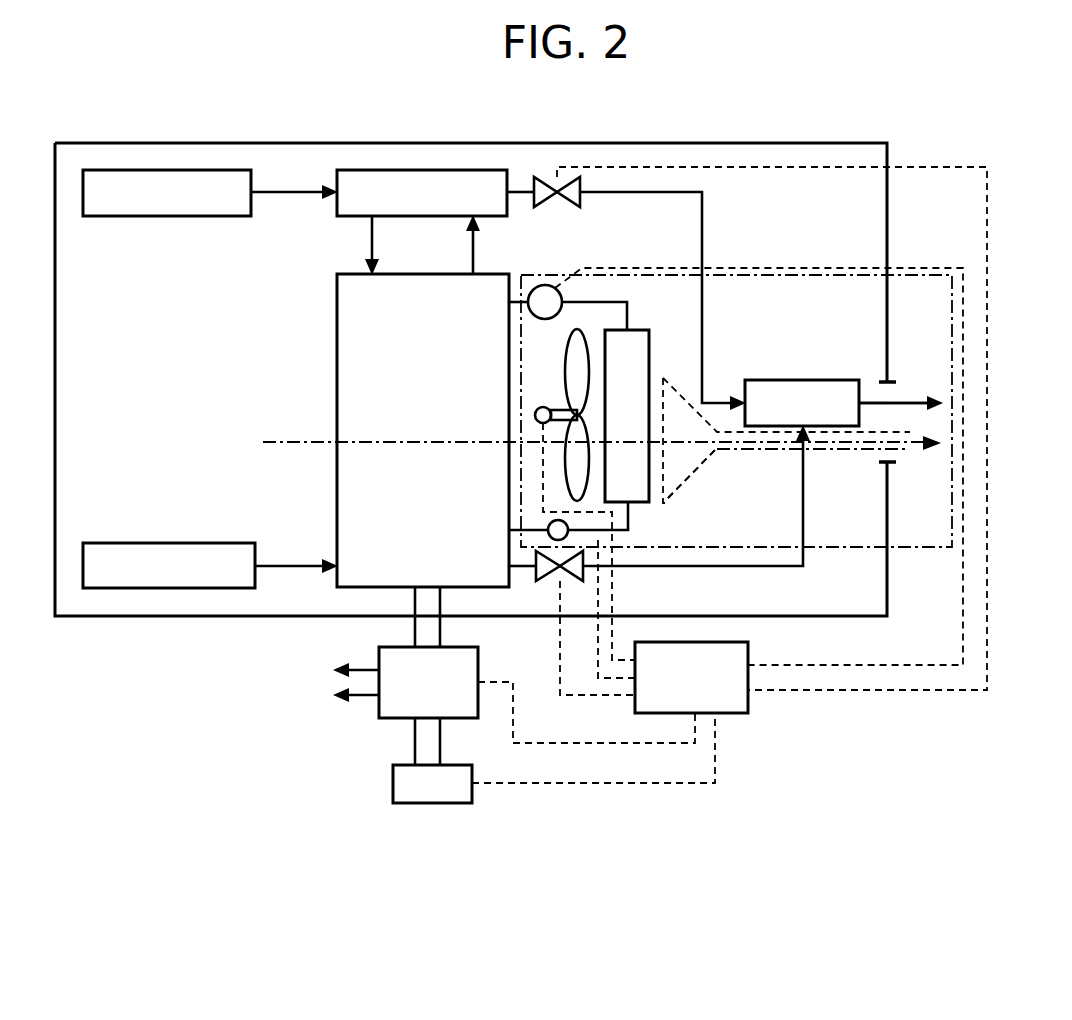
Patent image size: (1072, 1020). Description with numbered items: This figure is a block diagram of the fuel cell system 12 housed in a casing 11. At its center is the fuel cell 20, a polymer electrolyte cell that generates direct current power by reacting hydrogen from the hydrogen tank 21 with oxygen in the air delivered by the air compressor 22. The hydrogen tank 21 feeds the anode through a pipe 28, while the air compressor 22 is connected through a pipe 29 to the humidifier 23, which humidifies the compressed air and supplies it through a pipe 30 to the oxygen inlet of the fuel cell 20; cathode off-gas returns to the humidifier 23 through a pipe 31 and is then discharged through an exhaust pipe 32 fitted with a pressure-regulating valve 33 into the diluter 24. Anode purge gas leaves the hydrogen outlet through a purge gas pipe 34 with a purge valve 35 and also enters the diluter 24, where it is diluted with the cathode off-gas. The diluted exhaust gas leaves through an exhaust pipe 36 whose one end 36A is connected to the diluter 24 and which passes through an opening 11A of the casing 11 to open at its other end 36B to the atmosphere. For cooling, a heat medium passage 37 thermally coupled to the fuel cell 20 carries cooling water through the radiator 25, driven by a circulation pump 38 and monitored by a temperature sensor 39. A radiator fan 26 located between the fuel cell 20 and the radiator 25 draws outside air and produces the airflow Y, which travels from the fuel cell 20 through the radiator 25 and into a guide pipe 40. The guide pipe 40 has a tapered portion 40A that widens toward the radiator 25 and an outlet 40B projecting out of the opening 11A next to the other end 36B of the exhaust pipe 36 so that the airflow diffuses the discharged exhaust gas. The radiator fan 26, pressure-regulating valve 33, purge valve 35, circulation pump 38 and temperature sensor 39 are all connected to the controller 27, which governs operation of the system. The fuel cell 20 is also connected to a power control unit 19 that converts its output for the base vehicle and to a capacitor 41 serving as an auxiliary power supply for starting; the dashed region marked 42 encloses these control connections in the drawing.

The casing 11 is at (888, 197).
The opening 11A is at (896, 384).
The fuel cell system 12 is at (940, 131).
The power control unit 19 is at (395, 708).
The fuel cell 20 is at (337, 313).
The hydrogen tank 21 is at (170, 543).
The air compressor 22 is at (163, 216).
The humidifier 23 is at (416, 186).
The diluter 24 is at (798, 380).
The radiator 25 is at (636, 353).
The radiator fan 26 is at (572, 378).
The controller 27 is at (730, 703).
The pipe 28 is at (290, 562).
The pipe 29 is at (290, 196).
The pipe 30 is at (374, 234).
The pipe 31 is at (475, 238).
The exhaust pipe 32 is at (656, 190).
The pressure-regulating valve 33 is at (556, 178).
The purge gas pipe 34 is at (738, 567).
The purge valve 35 is at (560, 570).
The exhaust pipe 36 is at (914, 397).
The one end 36A is at (873, 390).
The other end 36B is at (944, 409).
The heat medium passage 37 is at (598, 302).
The circulation pump 38 is at (548, 284).
The temperature sensor 39 is at (567, 530).
The guide pipe 40 is at (702, 474).
The tapered portion 40A is at (670, 494).
The outlet 40B is at (918, 455).
The capacitor 41 is at (432, 795).
The ventilation unit 42 is at (952, 312).
The airflow Y is at (822, 455).